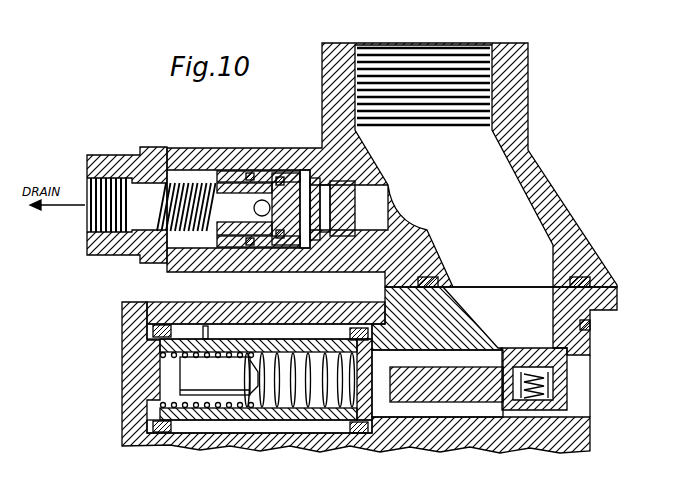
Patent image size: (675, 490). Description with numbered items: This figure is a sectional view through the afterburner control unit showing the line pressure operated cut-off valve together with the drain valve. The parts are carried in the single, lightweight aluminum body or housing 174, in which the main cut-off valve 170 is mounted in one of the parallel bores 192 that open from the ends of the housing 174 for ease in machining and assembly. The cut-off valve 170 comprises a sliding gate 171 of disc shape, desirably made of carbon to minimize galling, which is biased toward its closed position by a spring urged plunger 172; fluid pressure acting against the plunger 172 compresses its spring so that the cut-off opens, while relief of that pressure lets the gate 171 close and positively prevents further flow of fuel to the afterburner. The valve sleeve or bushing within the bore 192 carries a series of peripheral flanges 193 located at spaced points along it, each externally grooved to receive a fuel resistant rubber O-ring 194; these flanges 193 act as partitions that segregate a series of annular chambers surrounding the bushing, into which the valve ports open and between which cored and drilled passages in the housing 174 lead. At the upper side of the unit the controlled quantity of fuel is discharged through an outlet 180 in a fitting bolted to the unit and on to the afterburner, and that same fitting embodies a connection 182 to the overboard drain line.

The outlet 180 is at (420, 44).
The connection to overboard drain line 182 is at (107, 156).
The parallel bore 192 is at (254, 324).
The peripheral flange 193 is at (343, 436).
The O-ring 194 is at (358, 434).
The spring urged plunger 172 is at (413, 392).
The housing 174 is at (473, 440).
The sliding gate 171 is at (567, 357).
The main cut-off valve 170 is at (592, 391).